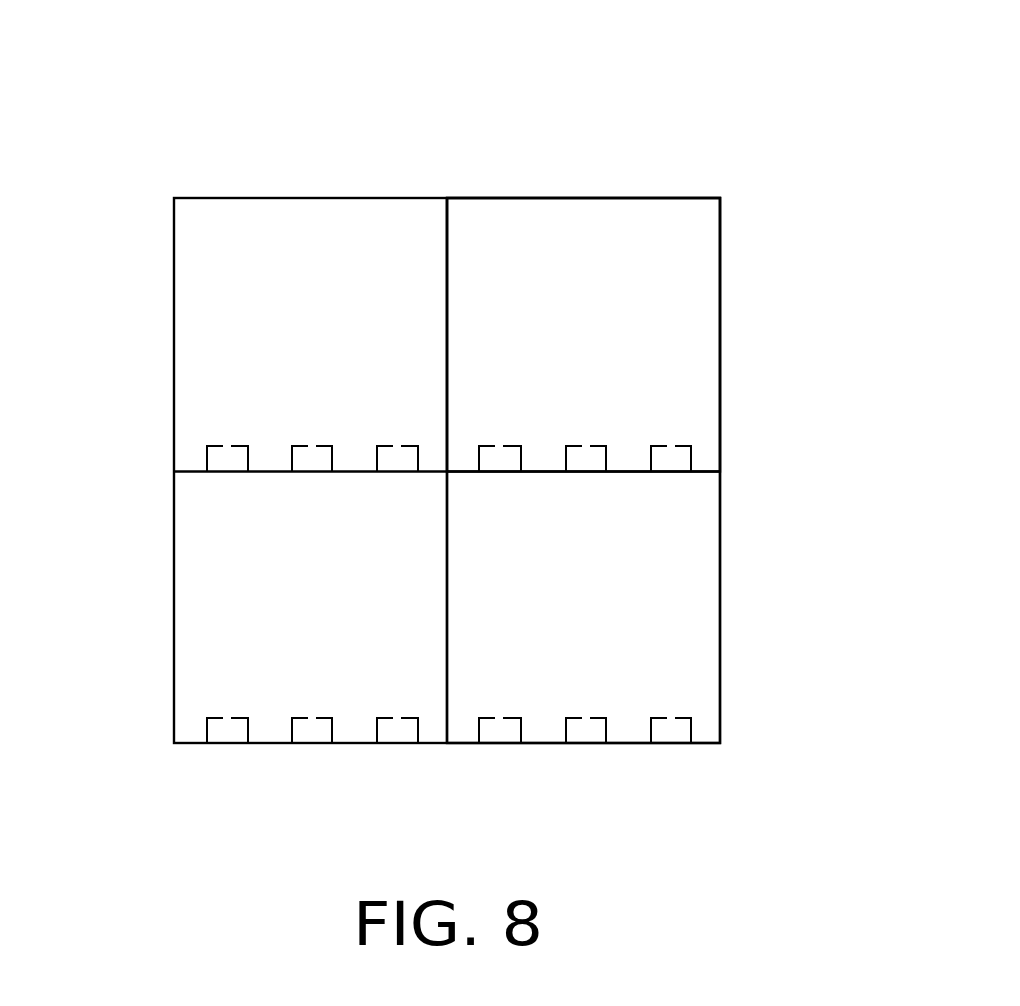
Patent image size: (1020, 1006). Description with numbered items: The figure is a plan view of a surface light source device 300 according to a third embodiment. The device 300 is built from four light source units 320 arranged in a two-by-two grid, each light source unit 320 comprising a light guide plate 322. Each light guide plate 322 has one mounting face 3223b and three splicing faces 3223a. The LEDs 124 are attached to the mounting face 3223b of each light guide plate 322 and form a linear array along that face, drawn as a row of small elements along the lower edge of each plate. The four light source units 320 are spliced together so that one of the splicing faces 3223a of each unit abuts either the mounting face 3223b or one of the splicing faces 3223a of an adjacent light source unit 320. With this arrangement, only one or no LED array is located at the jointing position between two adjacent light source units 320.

The surface light source device 300 is at (447, 379).
The light source unit 320 is at (832, 262).
The light guide plate 322 is at (636, 339).
The LEDs 124 is at (589, 457).
The splicing face 3223a is at (438, 329).
The mounting face 3223b is at (268, 456).